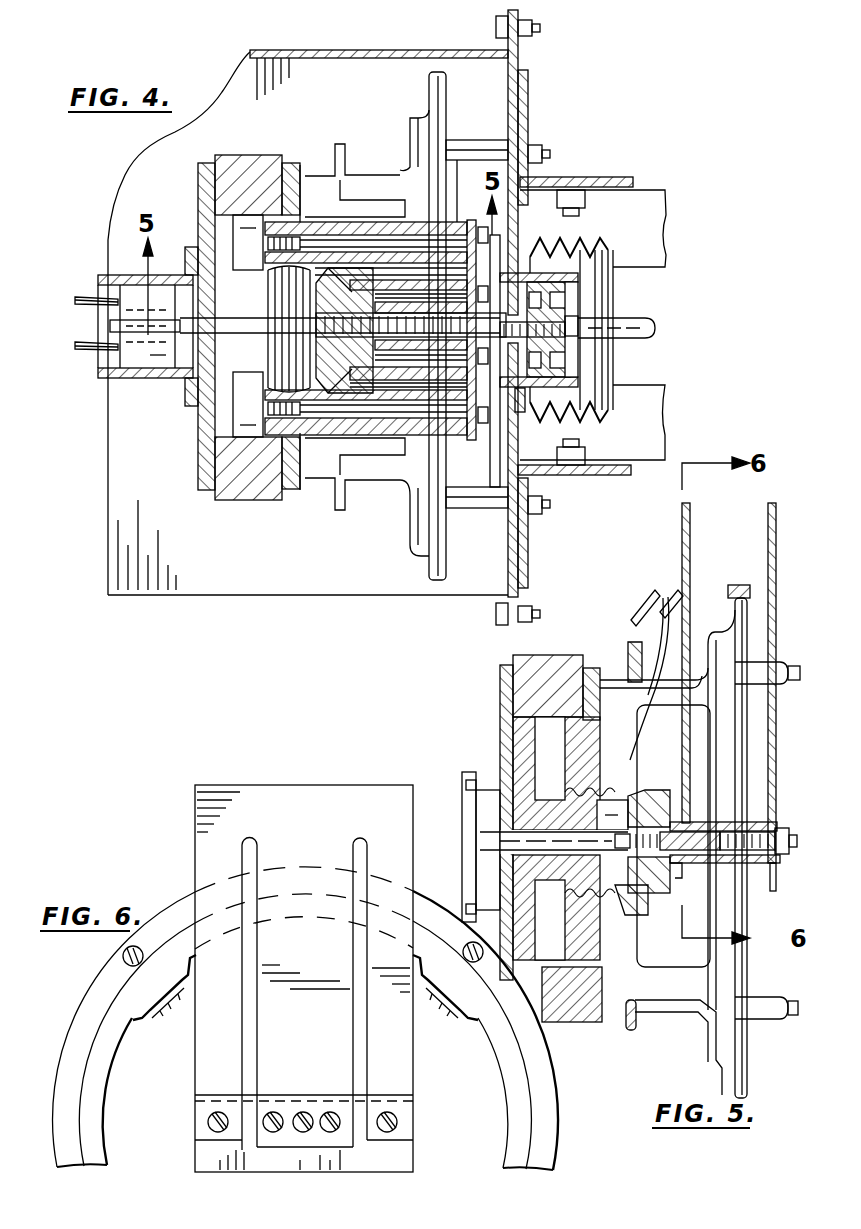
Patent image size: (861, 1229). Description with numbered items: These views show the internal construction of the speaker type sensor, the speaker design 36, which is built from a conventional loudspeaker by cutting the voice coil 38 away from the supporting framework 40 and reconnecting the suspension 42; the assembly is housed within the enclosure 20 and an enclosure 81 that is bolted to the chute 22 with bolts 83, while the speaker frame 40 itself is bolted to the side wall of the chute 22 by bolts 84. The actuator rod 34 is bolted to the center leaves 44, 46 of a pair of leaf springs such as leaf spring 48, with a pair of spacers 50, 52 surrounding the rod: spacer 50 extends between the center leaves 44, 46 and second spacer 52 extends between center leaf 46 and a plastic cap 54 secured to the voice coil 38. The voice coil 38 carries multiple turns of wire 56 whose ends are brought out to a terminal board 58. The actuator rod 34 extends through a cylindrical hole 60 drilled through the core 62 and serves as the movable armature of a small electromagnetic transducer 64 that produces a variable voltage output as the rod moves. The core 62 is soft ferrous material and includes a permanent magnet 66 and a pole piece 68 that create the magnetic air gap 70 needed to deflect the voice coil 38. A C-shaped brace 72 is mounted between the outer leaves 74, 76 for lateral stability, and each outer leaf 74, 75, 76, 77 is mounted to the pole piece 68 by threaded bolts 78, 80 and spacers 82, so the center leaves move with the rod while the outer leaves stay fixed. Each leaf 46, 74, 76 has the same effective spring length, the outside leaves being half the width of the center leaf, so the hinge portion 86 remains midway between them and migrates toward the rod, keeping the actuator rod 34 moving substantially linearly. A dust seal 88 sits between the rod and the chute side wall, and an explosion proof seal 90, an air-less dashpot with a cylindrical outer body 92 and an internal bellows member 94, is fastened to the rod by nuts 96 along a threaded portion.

In FIG. 4, the housing 20 is at (340, 46).
In FIG. 4, the chute 22 is at (650, 182).
In FIG. 4, the actuator rod 34 is at (110, 322).
In FIG. 5, the actuator rod 34 is at (795, 832).
In FIG. 6, the actuator rod 34 is at (304, 1112).
In FIG. 4, the speaker design 36 is at (294, 132).
In FIG. 5, the speaker design 36 is at (482, 712).
In FIG. 4, the voice coil 38 is at (345, 268).
In FIG. 5, the voice coil 38 is at (645, 790).
In FIG. 4, the supporting framework 40 is at (424, 100).
In FIG. 5, the supporting framework 40 is at (738, 585).
In FIG. 6, the supporting framework 40 is at (82, 1020).
In FIG. 5, the suspension 42 is at (785, 612).
In FIG. 5, the center leaf 44 is at (776, 530).
In FIG. 5, the center leaf 46 is at (690, 508).
In FIG. 6, the center leaf 46 is at (303, 1037).
In FIG. 6, the leaf spring 48 is at (300, 784).
In FIG. 4, the spacer 50 is at (420, 225).
In FIG. 5, the spacer 50 is at (760, 822).
In FIG. 6, the spacer 50 is at (196, 1092).
In FIG. 5, the second spacer 52 is at (678, 863).
In FIG. 4, the plastic cap 54 is at (352, 395).
In FIG. 5, the plastic cap 54 is at (645, 895).
In FIG. 4, the wire 56 is at (290, 410).
In FIG. 5, the wire 56 is at (562, 897).
In FIG. 5, the terminal board 58 is at (668, 612).
In FIG. 4, the cylindrical hole 60 is at (190, 380).
In FIG. 5, the cylindrical hole 60 is at (505, 840).
In FIG. 4, the core 62 is at (240, 300).
In FIG. 5, the core 62 is at (545, 862).
In FIG. 4, the electromagnetic transducer 64 is at (140, 380).
In FIG. 5, the electromagnetic transducer 64 is at (470, 782).
In FIG. 4, the permanent magnet 66 is at (235, 420).
In FIG. 5, the permanent magnet 66 is at (552, 662).
In FIG. 4, the pole piece 68 is at (288, 495).
In FIG. 5, the pole piece 68 is at (594, 668).
In FIG. 4, the magnetic air gap 70 is at (225, 405).
In FIG. 5, the magnetic air gap 70 is at (570, 770).
In FIG. 4, the C-shaped brace 72 is at (480, 500).
In FIG. 5, the C-shaped brace 72 is at (774, 892).
In FIG. 6, the C-shaped brace 72 is at (298, 1172).
In FIG. 4, the outer leaf 74 is at (388, 250).
In FIG. 6, the outer leaf 74 is at (200, 1060).
In FIG. 4, the outer leaf 75 is at (460, 230).
In FIG. 4, the outer leaf 76 is at (388, 462).
In FIG. 6, the outer leaf 76 is at (408, 1060).
In FIG. 4, the outer leaf 77 is at (466, 440).
In FIG. 4, the threaded bolt 78 is at (483, 425).
In FIG. 6, the threaded bolt 78 is at (398, 1124).
In FIG. 4, the threaded bolt 80 is at (472, 224).
In FIG. 6, the threaded bolt 80 is at (208, 1124).
In FIG. 4, the enclosure 81 is at (245, 595).
In FIG. 4, the spacer 82 is at (320, 190).
In FIG. 4, the bolt 83 is at (540, 29).
In FIG. 4, the bolt 84 is at (550, 154).
In FIG. 5, the bolt 84 is at (796, 666).
In FIG. 6, the bolt 84 is at (122, 953).
In FIG. 6, the hinge portion 86 is at (328, 815).
In FIG. 4, the dust seal 88 is at (605, 410).
In FIG. 4, the explosion proof seal 90 is at (570, 268).
In FIG. 4, the cylindrical outer body 92 is at (560, 300).
In FIG. 4, the bellows member 94 is at (580, 355).
In FIG. 4, the nut 96 is at (590, 310).